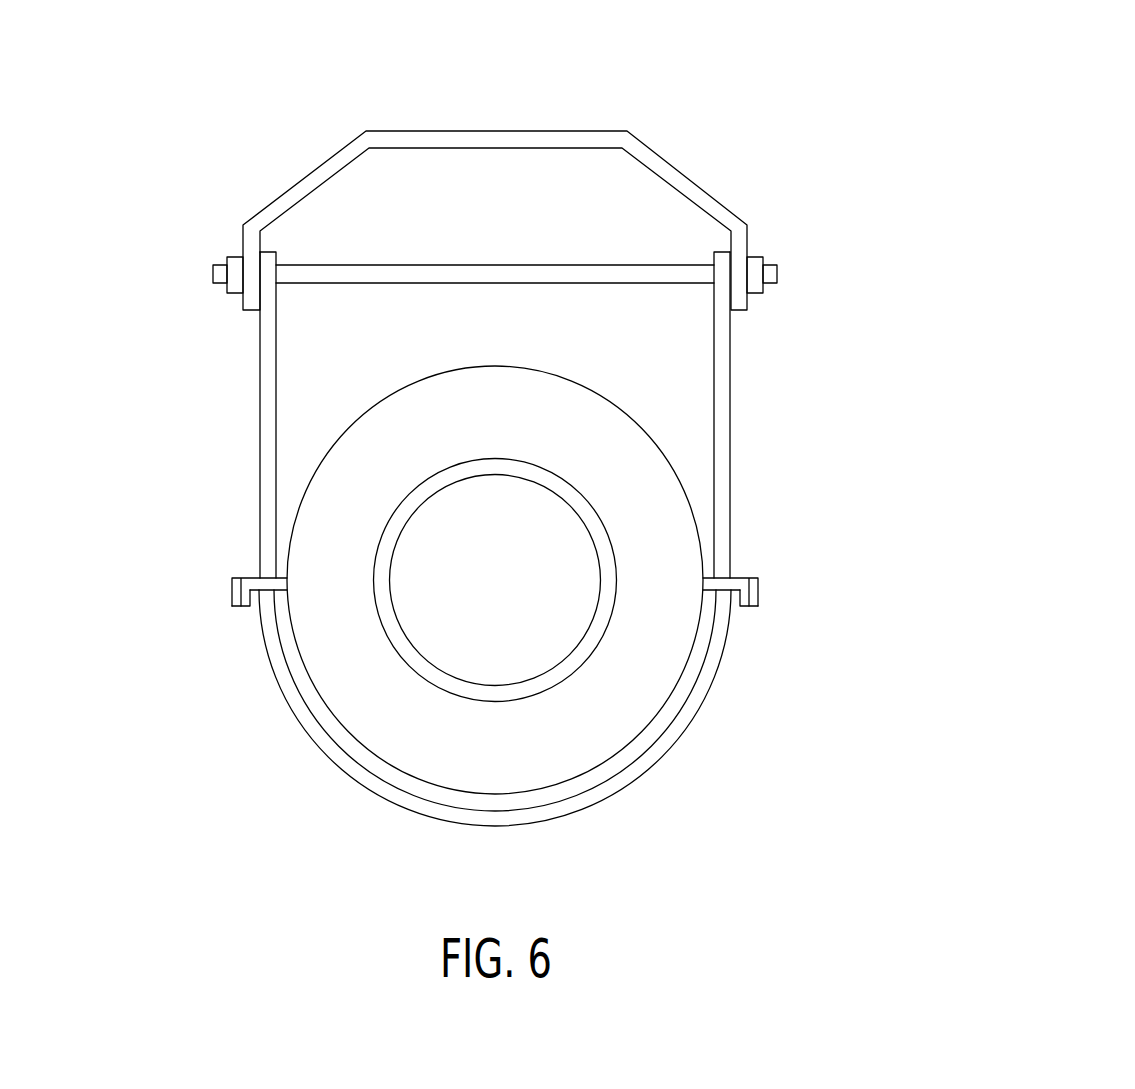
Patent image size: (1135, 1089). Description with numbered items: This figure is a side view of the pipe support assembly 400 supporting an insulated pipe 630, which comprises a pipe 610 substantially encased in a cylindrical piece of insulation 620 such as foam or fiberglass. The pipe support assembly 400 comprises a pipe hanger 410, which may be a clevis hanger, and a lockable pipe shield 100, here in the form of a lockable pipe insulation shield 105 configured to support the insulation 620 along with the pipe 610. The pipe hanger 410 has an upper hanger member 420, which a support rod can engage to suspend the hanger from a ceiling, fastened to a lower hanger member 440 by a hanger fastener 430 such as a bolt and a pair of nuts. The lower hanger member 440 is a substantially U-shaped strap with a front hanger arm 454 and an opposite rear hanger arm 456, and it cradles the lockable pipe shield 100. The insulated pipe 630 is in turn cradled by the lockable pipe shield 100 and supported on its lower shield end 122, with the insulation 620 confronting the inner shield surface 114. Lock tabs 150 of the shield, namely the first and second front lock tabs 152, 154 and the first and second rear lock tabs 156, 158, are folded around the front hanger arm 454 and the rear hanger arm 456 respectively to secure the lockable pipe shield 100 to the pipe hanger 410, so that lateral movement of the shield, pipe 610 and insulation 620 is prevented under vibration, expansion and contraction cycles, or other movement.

The pipe support assembly 400 is at (708, 88).
The upper hanger member 420 is at (685, 188).
The hanger fastener 430 is at (362, 231).
The pipe hanger 410 is at (262, 376).
The front hanger arm 454 is at (262, 447).
The lower hanger member 440 is at (724, 355).
The rear hanger arm 456 is at (724, 510).
The insulated pipe 630 is at (341, 359).
The insulation 620 is at (652, 489).
The pipe 610 is at (572, 498).
The lock tabs 150 is at (208, 589).
The first front lock tab 152 is at (259, 592).
The second front lock tab 154 is at (241, 598).
The first rear lock tab 156 is at (730, 592).
The second rear lock tab 158 is at (749, 598).
The lockable pipe shield 100 is at (331, 719).
The lockable pipe insulation shield 105 is at (495, 738).
The inner shield surface 114 is at (651, 698).
The lower shield end 122 is at (503, 801).